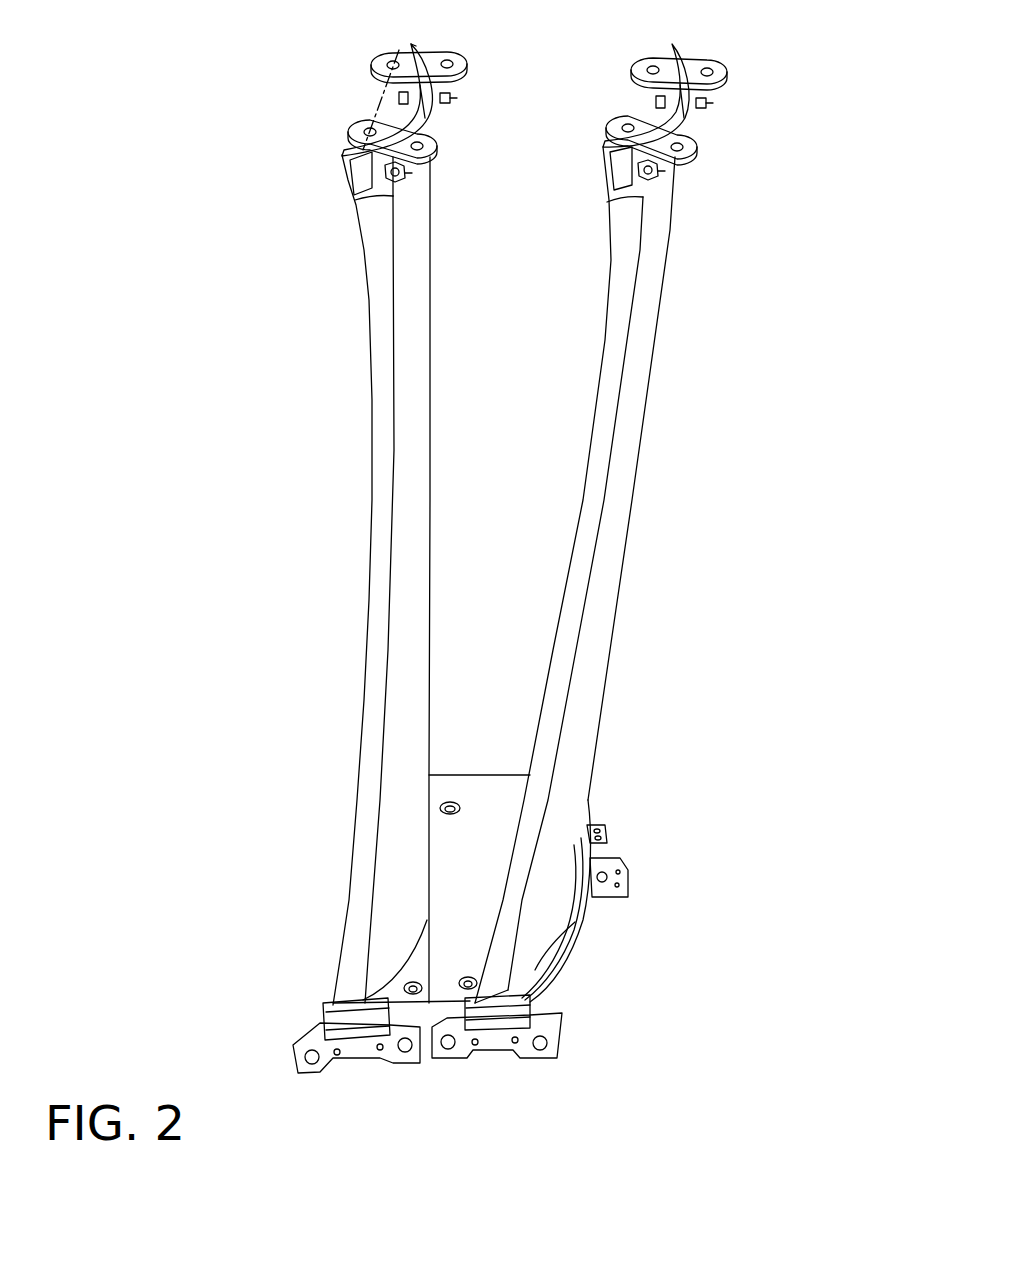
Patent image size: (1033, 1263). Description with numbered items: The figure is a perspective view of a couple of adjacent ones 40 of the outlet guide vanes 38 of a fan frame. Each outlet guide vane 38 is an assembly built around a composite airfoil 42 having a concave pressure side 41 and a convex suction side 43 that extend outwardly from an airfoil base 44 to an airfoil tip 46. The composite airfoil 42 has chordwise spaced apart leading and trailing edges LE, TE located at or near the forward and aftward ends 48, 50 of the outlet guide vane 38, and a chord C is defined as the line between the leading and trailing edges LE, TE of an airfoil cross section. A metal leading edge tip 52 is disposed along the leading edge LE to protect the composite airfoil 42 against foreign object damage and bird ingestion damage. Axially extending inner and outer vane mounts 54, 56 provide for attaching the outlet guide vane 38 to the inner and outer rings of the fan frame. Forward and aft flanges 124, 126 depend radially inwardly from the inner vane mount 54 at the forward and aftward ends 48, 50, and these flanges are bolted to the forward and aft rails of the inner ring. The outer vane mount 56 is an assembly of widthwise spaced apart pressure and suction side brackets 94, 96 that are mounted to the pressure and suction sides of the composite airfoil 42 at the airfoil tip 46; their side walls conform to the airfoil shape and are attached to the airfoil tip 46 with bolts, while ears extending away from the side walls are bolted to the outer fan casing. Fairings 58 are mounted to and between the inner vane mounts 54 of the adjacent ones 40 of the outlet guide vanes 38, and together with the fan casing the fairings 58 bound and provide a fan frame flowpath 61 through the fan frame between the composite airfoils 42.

The adjacent ones of the outlet guide vanes 40 is at (523, 566).
The outlet guide vane 38 is at (430, 681).
The pressure side 41 is at (403, 90).
The composite airfoil 42 is at (407, 590).
The suction side 43 is at (413, 295).
The airfoil base 44 is at (410, 950).
The airfoil tip 46 is at (390, 137).
The forward end 48 is at (347, 165).
The aftward end 50 is at (407, 50).
The metal leading edge tip 52 is at (371, 537).
The inner vane mount 54 is at (585, 950).
The outer vane mount 56 is at (660, 180).
The fairing 58 is at (453, 788).
The fan frame flowpath 61 is at (529, 527).
The pressure side bracket 94 is at (666, 60).
The suction side bracket 96 is at (698, 94).
The forward flange 124 is at (450, 1065).
The aft flange 126 is at (608, 860).
The chord C is at (380, 100).
The leading edge LE is at (356, 199).
The trailing edge TE is at (413, 43).